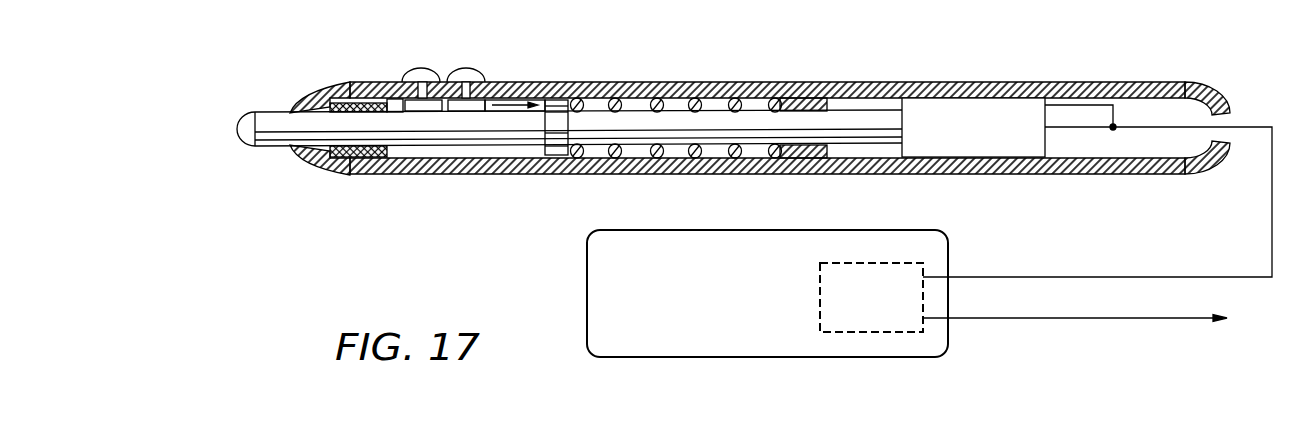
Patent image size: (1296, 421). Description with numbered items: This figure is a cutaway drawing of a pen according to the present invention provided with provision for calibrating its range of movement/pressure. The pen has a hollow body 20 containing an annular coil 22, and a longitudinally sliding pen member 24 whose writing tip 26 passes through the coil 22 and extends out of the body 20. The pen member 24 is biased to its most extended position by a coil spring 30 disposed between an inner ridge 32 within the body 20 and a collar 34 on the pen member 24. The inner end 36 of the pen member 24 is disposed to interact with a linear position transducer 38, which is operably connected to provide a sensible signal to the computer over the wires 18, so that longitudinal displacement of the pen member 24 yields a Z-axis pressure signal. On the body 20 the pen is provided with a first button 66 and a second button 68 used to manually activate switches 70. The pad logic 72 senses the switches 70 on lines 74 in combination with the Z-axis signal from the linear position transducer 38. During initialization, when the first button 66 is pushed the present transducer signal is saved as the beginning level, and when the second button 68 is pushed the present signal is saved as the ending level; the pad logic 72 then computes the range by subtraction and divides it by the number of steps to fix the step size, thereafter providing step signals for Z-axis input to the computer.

The wires 18 is at (1245, 100).
The hollow body 20 is at (687, 83).
The annular coil 22 is at (343, 101).
The pen member 24 is at (357, 120).
The writing tip 26 is at (256, 112).
The coil spring 30 is at (606, 95).
The inner ridge 32 is at (830, 103).
The collar 34 is at (557, 137).
The inner end 36 is at (894, 137).
The linear position transducer 38 is at (1029, 108).
The first button 66 is at (417, 67).
The second button 68 is at (470, 67).
The switches 70 is at (430, 103).
The pad logic 72 is at (917, 263).
The lines 74 is at (513, 103).